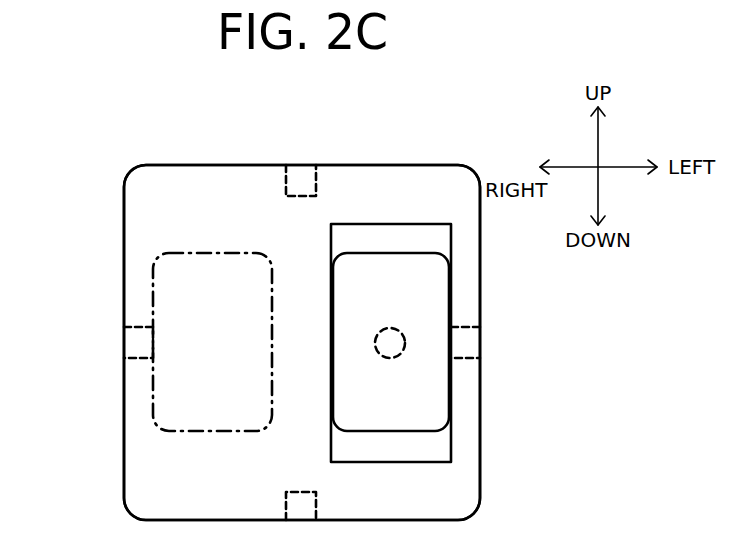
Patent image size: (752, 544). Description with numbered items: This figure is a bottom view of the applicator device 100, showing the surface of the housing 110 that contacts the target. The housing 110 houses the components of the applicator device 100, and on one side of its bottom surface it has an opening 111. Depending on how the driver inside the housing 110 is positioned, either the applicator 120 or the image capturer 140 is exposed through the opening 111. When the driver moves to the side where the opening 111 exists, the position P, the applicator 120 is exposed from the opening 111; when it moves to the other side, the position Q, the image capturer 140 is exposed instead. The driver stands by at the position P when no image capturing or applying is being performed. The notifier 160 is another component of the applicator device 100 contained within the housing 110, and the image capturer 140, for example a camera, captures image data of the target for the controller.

The applicator device 100 is at (147, 160).
The housing 110 is at (446, 165).
The opening 111 is at (360, 224).
The applicator 120 is at (418, 253).
The image capturer 140 is at (390, 328).
The notifier 160 is at (285, 190).
The position P is at (390, 432).
The position Q is at (218, 432).